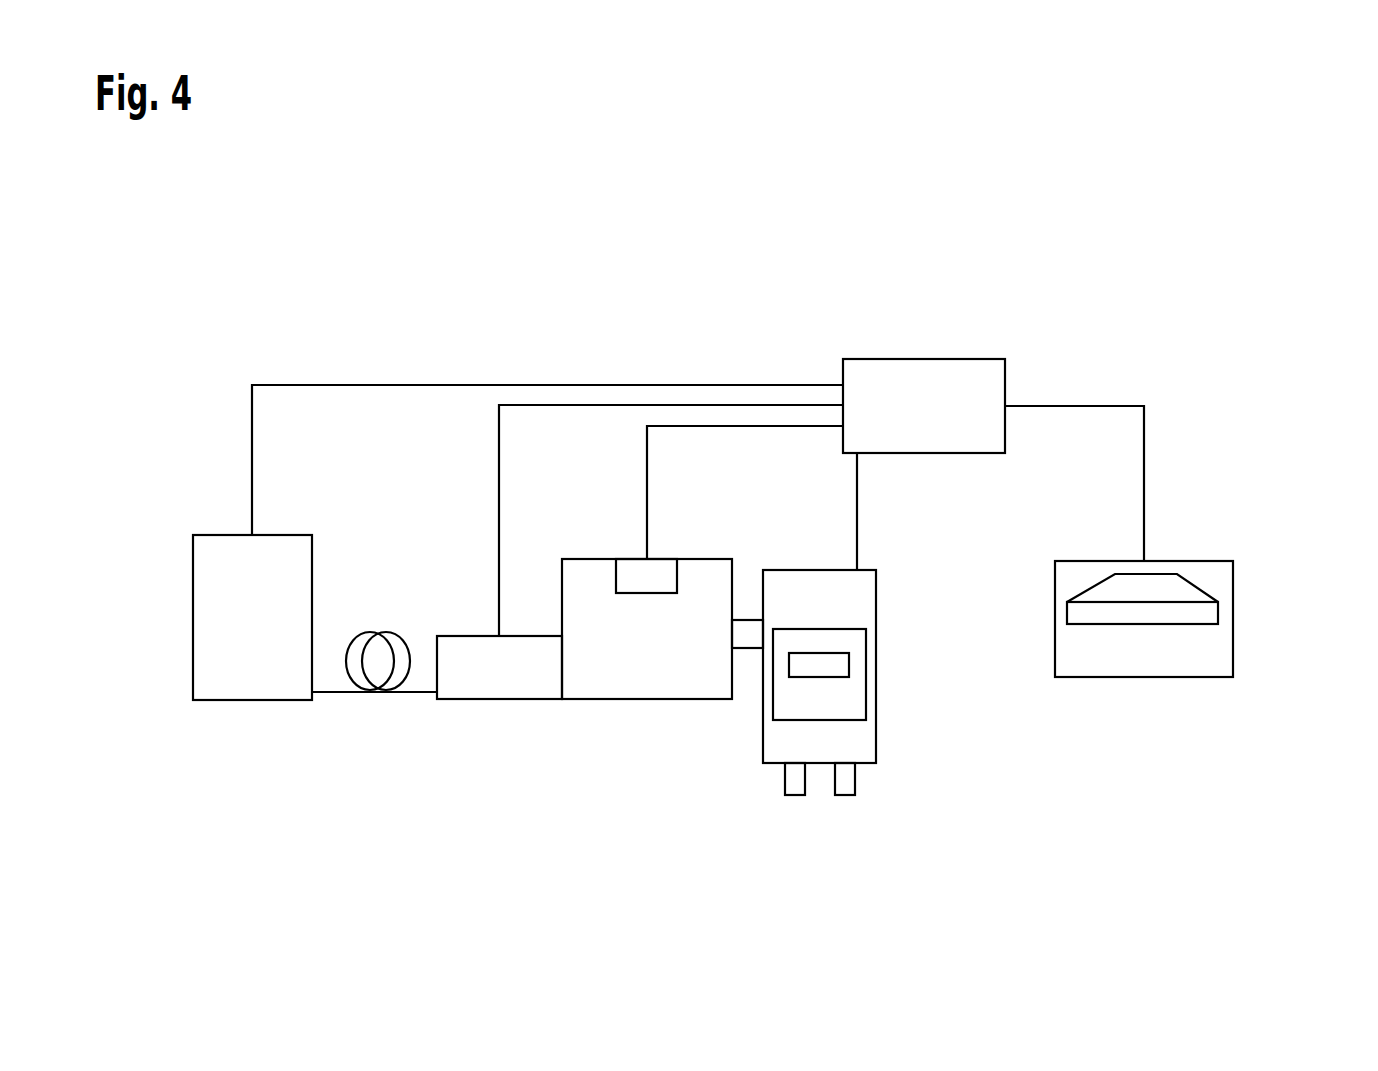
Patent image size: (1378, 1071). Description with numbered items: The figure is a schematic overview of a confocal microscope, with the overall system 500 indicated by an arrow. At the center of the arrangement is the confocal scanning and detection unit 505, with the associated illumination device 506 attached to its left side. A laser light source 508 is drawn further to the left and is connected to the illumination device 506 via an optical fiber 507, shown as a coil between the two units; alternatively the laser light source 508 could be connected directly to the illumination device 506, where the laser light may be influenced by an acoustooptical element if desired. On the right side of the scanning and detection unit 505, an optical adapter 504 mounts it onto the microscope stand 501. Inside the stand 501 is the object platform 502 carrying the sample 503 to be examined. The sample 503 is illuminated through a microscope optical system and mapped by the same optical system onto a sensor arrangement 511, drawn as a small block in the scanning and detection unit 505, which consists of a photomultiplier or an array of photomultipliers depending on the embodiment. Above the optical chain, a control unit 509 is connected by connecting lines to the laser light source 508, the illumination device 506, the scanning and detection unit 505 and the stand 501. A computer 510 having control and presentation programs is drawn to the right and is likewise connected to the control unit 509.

The overall system 500 is at (288, 264).
The microscope stand 501 is at (877, 738).
The object platform 502 is at (867, 698).
The sample 503 is at (850, 665).
The optical adapter 504 is at (750, 649).
The confocal scanning and detection unit 505 is at (651, 701).
The illumination device 506 is at (500, 701).
The optical fiber 507 is at (372, 716).
The laser light source 508 is at (256, 701).
The control unit 509 is at (924, 359).
The computer 510 is at (1234, 612).
The sensor arrangement 511 is at (677, 575).